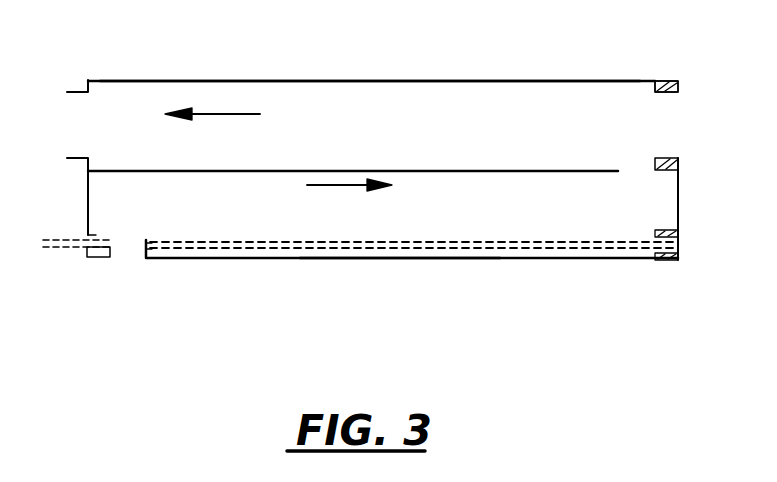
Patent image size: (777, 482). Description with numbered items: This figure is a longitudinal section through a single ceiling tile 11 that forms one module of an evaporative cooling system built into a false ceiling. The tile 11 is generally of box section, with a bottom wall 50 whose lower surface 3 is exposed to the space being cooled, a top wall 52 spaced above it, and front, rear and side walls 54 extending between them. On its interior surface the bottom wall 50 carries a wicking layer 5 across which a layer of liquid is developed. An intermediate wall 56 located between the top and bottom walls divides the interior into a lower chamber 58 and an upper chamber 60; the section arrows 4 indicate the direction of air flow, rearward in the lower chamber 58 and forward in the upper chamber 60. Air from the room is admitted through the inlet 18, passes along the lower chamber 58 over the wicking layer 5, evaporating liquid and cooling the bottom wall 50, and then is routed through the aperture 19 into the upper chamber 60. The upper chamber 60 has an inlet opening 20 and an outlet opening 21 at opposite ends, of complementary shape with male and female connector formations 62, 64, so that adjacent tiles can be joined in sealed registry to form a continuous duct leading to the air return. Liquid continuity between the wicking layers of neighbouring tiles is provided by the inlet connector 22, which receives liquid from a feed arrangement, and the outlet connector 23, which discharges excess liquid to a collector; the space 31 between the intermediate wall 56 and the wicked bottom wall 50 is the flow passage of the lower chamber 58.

The tile 11 is at (182, 70).
The top wall 52 is at (412, 80).
The female connector formation 64 is at (67, 90).
The male connector formation 62 is at (680, 84).
The inlet opening 20 is at (665, 96).
The outlet opening 21 is at (80, 158).
The intermediate wall 56 is at (555, 170).
The aperture 19 is at (640, 165).
The walls 54 is at (87, 200).
The inlet connector 22 is at (680, 252).
The outlet connector 23 is at (62, 253).
The inlet 18 is at (127, 253).
The bottom wall 50 is at (247, 264).
The lower surface 3 is at (396, 260).
The wicking layer 5 is at (480, 245).
The lower chamber 31 is at (573, 218).
The lower chamber 58 is at (219, 204).
The upper chamber 60 is at (401, 125).
The flow direction arrows 4 is at (278, 163).